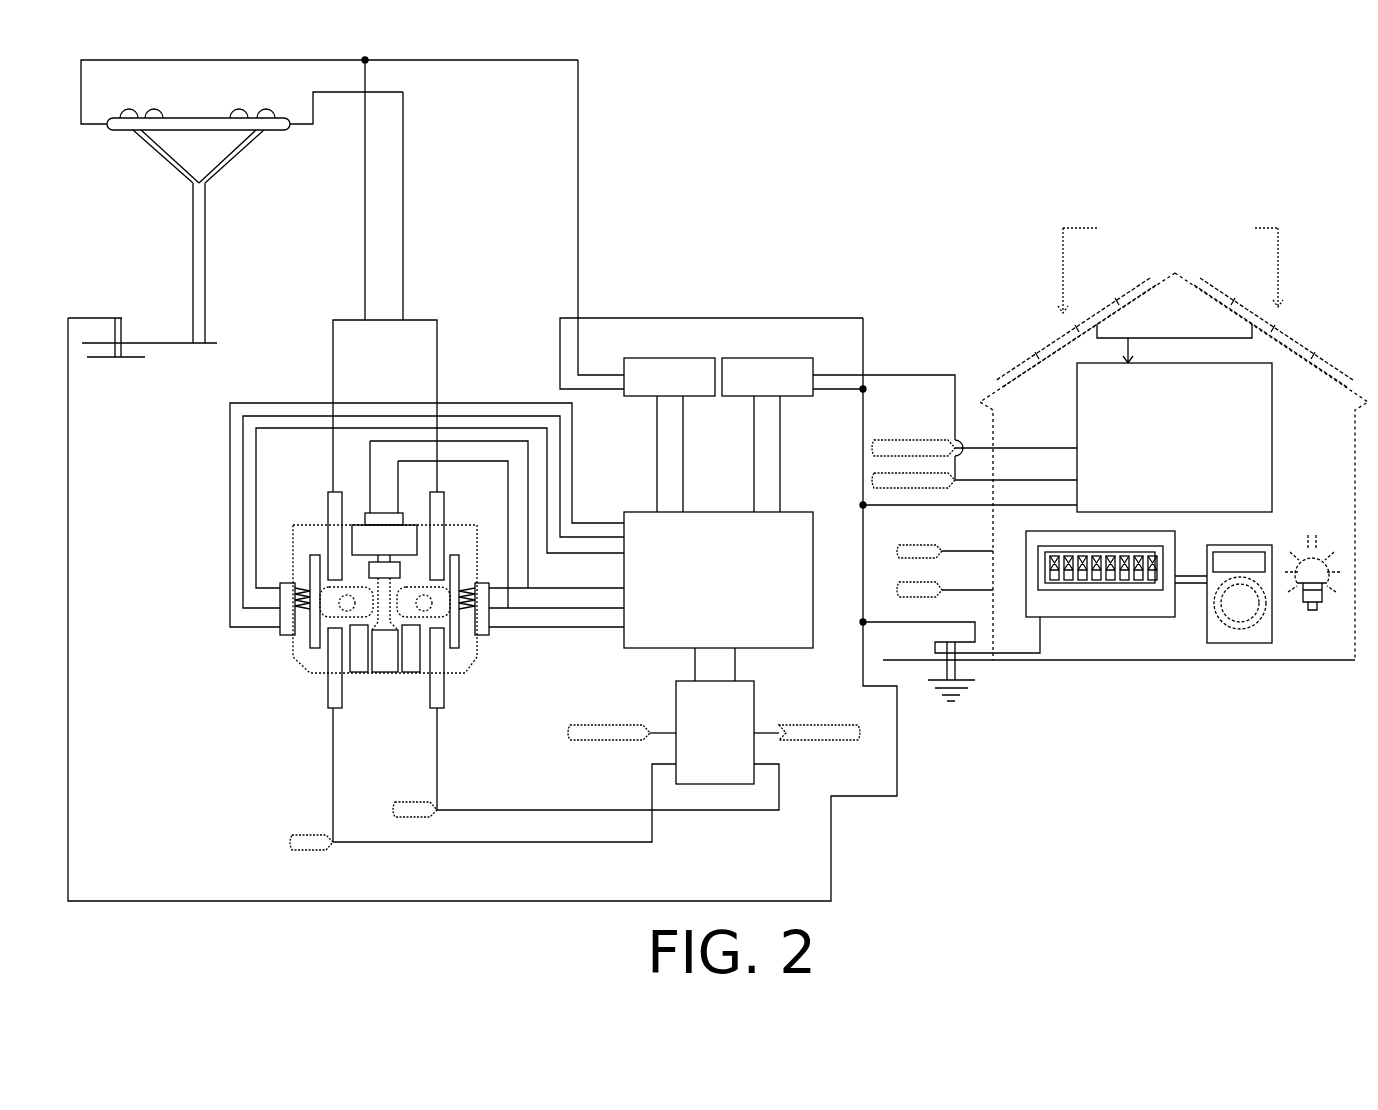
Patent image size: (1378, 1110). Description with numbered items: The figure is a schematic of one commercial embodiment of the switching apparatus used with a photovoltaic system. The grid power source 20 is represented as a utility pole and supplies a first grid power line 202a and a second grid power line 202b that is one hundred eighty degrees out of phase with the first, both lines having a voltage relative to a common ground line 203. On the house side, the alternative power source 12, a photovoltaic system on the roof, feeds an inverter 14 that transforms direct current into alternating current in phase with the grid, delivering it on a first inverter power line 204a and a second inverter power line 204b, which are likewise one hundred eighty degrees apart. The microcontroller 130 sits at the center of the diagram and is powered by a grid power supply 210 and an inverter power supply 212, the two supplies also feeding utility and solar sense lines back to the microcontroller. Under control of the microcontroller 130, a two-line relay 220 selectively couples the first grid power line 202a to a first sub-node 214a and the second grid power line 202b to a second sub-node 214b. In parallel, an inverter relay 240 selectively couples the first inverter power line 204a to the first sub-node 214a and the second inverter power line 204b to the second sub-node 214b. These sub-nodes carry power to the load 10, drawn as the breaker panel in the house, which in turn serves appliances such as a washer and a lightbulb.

The load 10 is at (1100, 620).
The alternative power source 12 is at (1053, 345).
The inverter 14 is at (1192, 470).
The grid power source 20 is at (197, 122).
The microcontroller 130 is at (781, 627).
The first grid power line 202a is at (365, 234).
The second grid power line 202b is at (404, 234).
The common ground line 203 is at (897, 762).
The first inverter power line 204a is at (926, 440).
The second inverter power line 204b is at (957, 468).
The grid power supply 210 is at (670, 356).
The inverter power supply 212 is at (760, 356).
The first sub-node 214a is at (929, 541).
The second sub-node 214b is at (920, 598).
The two-line relay 220 is at (295, 658).
The inverter relay 240 is at (718, 785).